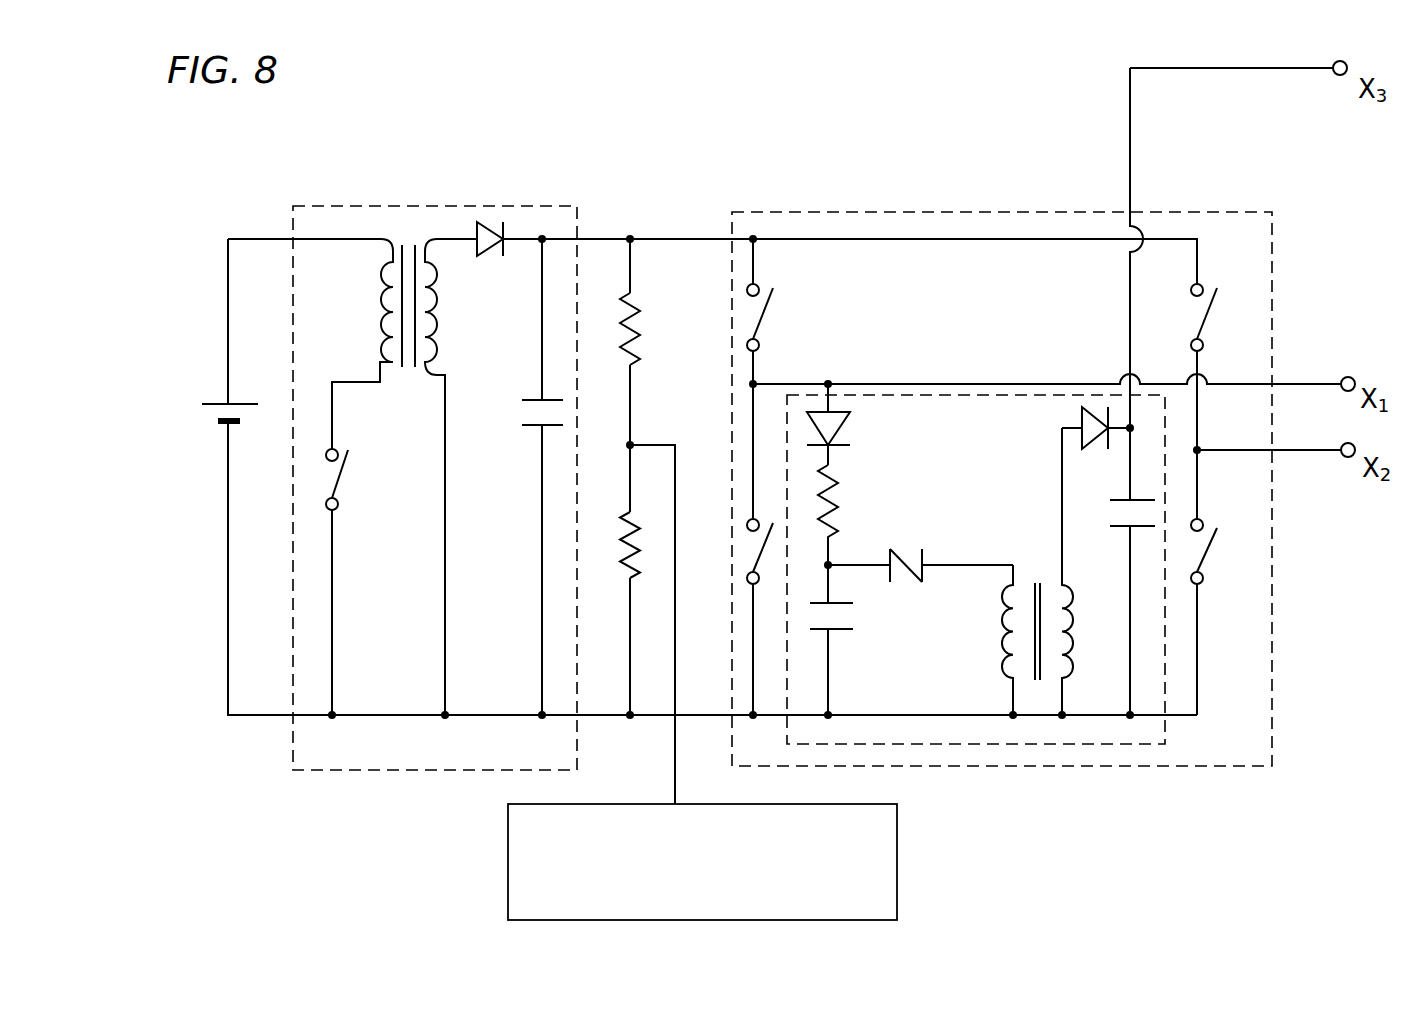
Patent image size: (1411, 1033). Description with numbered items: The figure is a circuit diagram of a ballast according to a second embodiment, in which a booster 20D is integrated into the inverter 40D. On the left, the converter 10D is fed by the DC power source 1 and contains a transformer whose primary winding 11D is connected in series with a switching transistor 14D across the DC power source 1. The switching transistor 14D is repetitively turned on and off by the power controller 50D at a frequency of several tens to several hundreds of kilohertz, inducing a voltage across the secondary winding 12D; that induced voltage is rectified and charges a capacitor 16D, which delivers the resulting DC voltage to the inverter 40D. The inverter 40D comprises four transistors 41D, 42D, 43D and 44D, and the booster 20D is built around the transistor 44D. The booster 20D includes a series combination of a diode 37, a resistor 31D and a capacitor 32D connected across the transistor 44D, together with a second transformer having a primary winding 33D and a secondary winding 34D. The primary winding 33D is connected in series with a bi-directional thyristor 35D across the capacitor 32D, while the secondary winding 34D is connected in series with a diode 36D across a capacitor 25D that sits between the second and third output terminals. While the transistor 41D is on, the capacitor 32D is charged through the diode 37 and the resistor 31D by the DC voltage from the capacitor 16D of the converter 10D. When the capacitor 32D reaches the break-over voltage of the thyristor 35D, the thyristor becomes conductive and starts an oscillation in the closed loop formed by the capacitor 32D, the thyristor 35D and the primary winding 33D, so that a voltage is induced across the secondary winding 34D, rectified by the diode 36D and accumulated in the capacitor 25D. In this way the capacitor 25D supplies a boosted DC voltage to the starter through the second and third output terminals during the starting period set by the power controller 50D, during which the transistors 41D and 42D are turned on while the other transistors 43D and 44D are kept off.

The DC power source 1 is at (202, 412).
The converter 10D is at (293, 732).
The primary winding 11D is at (377, 278).
The secondary winding 12D is at (440, 283).
The switching transistor 14D is at (350, 483).
The capacitor 16D is at (522, 410).
The booster 20D is at (1021, 748).
The capacitor 25D is at (1102, 522).
The resistor 31D is at (847, 502).
The capacitor 32D is at (865, 623).
The primary winding 33D is at (1005, 618).
The secondary winding 34D is at (1070, 613).
The bi-directional thyristor 35D is at (900, 542).
The diode 36D is at (1063, 418).
The diode 37 is at (863, 438).
The inverter 40D is at (983, 207).
The transistor 41D is at (773, 322).
The transistor 42D is at (1218, 555).
The transistor 43D is at (1212, 313).
The transistor 44D is at (735, 550).
The power controller 50D is at (508, 837).